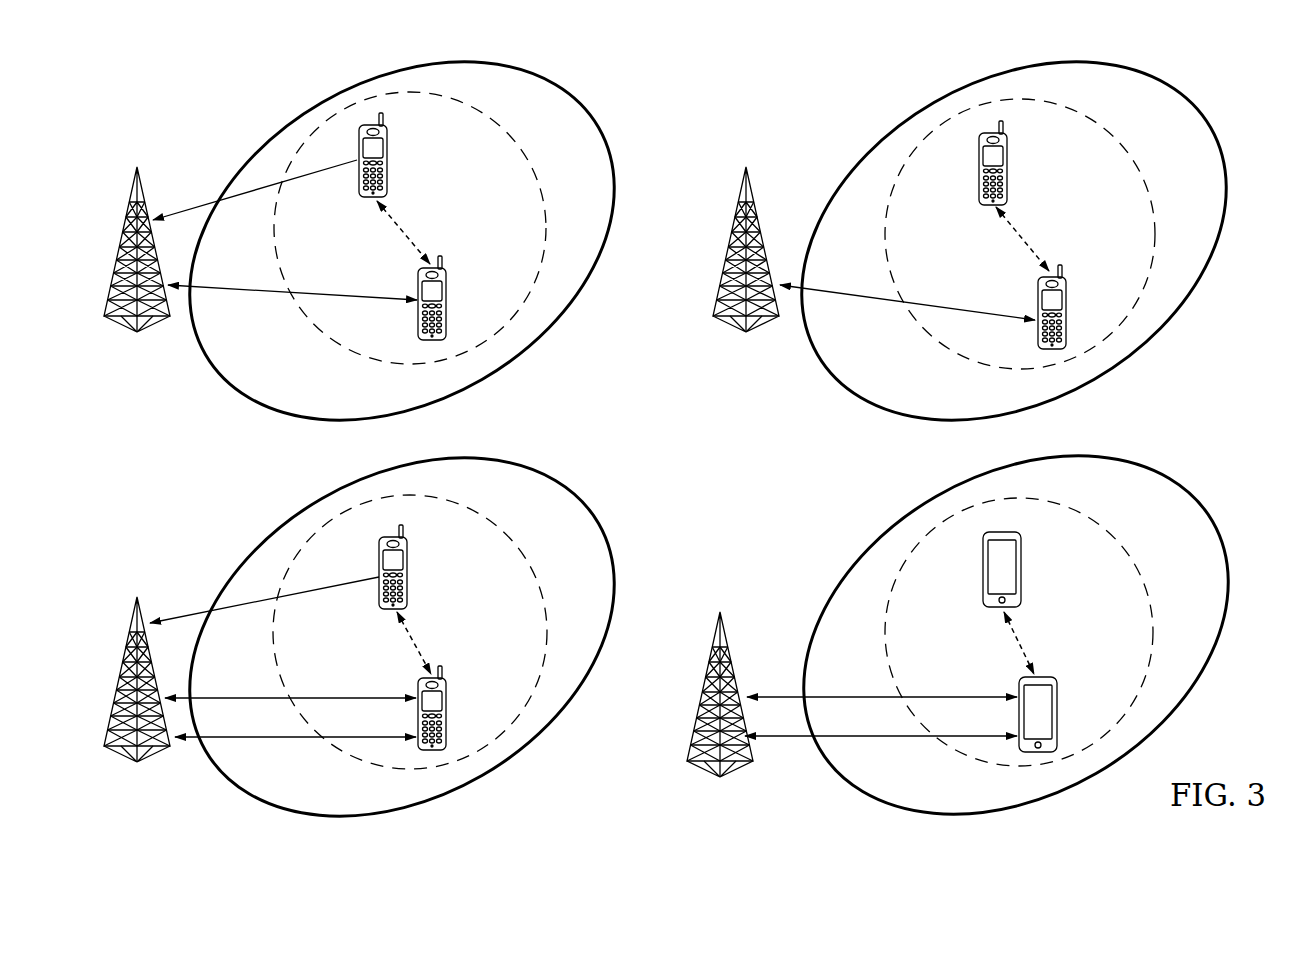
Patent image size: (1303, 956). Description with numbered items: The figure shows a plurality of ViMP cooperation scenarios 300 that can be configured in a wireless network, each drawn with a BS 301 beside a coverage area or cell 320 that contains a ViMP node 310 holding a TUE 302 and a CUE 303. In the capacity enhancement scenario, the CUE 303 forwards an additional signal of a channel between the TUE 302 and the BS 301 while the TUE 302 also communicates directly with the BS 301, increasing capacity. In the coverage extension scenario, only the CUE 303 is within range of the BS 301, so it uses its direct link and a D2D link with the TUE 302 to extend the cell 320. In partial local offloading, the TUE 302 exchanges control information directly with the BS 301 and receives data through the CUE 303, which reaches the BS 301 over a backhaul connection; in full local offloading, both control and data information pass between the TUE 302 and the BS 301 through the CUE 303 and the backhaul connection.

The ViMP cooperation scenarios 300 is at (204, 106).
The BS 301 is at (705, 769).
The TUE 302 is at (1022, 568).
The CUE 303 is at (1058, 712).
The ViMP node 310 is at (970, 762).
The coverage area or cell 320 is at (874, 545).